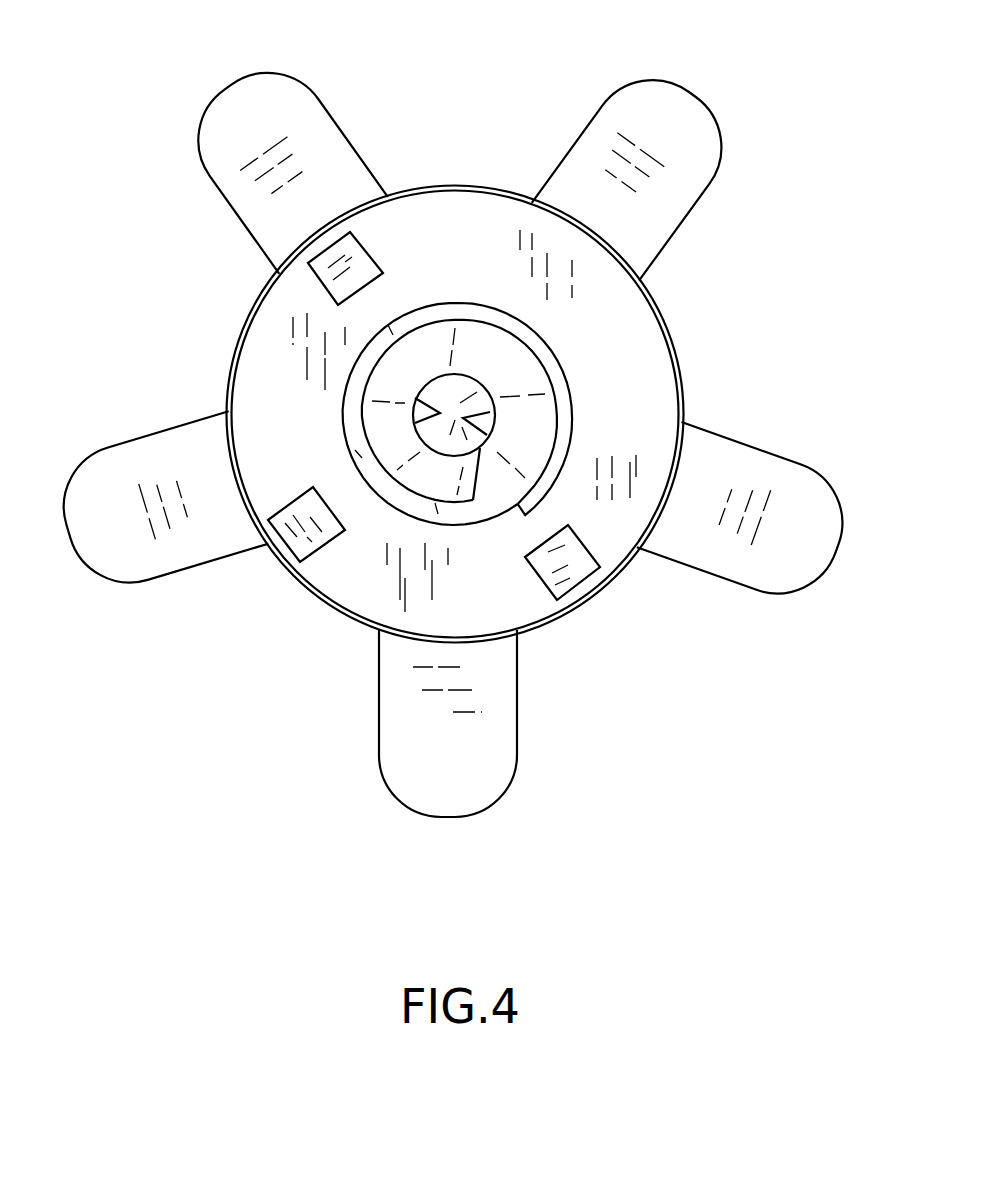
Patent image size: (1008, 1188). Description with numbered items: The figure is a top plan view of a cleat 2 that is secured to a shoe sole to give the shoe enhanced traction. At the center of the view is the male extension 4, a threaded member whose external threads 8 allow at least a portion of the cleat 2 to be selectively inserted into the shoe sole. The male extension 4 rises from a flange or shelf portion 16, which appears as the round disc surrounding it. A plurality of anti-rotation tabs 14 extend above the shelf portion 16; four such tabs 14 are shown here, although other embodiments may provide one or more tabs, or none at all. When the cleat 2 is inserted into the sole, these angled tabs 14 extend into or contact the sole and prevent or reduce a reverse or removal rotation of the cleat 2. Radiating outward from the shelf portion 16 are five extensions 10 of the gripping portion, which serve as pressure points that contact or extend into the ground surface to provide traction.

The cleat 2 is at (460, 431).
The male extension 4 is at (490, 548).
The external threads 8 is at (532, 445).
The extensions 10 is at (247, 150).
The anti-rotation tabs 14 is at (357, 267).
The shelf portion 16 is at (261, 353).